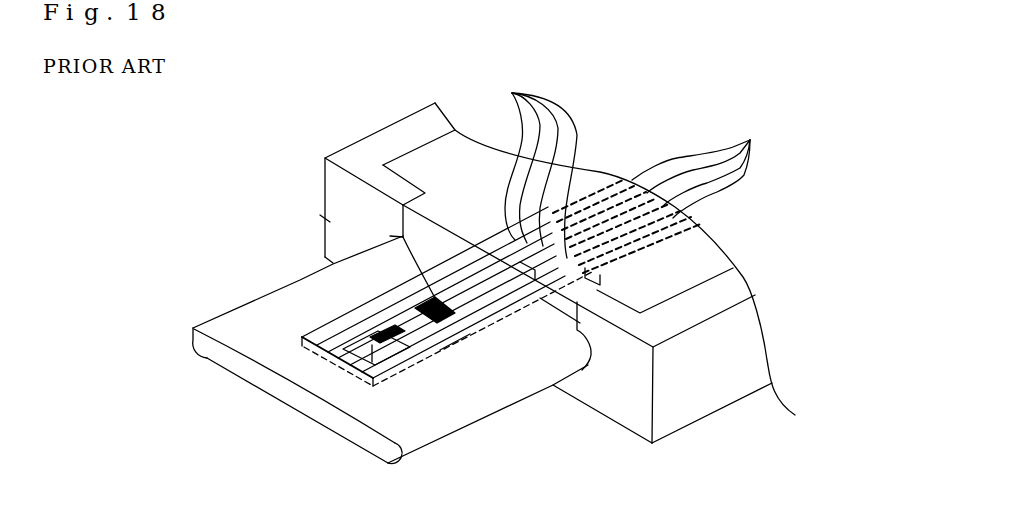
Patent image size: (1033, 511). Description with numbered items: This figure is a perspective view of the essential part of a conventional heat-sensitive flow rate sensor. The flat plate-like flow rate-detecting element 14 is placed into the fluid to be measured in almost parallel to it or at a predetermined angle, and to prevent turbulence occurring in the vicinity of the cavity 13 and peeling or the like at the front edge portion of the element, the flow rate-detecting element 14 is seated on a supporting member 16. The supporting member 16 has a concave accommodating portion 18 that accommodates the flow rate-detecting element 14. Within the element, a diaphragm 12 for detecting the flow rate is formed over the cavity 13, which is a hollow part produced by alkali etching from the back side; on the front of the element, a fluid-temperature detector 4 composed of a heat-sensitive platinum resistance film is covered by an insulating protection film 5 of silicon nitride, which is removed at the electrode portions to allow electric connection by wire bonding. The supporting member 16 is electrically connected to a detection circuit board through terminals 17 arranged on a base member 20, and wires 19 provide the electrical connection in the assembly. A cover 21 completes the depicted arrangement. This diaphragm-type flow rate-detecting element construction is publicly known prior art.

The suspension 4 is at (443, 360).
The actuator arm 5 is at (388, 237).
The magnetic head element 12 is at (346, 360).
The flexible printed circuit 13 is at (410, 360).
The head gimbal assembly 14 is at (340, 340).
The base 16 is at (273, 348).
The lead wires 17 is at (697, 168).
The slider 18 is at (305, 343).
The lead wires 19 is at (528, 169).
The clamp block 20 is at (612, 403).
The clamp block 21 is at (428, 168).